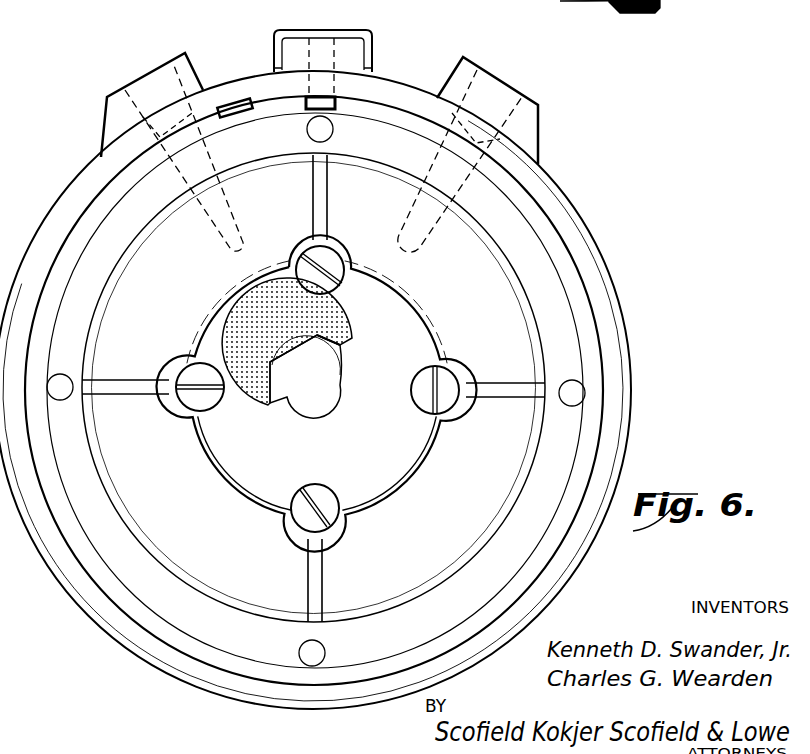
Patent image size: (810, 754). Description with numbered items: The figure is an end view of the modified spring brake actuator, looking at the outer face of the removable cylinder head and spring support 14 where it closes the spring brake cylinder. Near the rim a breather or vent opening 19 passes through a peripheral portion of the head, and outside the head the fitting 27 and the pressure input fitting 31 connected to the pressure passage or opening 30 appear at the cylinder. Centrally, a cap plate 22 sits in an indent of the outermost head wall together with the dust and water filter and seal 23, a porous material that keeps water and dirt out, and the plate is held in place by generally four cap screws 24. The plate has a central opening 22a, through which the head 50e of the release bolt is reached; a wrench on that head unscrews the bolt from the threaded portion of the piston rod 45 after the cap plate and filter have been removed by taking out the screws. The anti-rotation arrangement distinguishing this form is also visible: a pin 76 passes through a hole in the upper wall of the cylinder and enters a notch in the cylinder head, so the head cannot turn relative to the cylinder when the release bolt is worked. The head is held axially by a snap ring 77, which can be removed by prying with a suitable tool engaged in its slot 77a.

The cylinder head and spring support 14 is at (488, 302).
The breather or vent opening 19 is at (70, 394).
The cap plate 22 is at (244, 470).
The opening 22a is at (316, 418).
The dust and water filter and seal 23 is at (252, 328).
The cap screws 24 is at (194, 405).
The fitting 27 is at (277, 43).
The pressure passages or opening 30 is at (215, 198).
The pressure input fitting 31 is at (152, 74).
The piston rod 45 is at (336, 318).
The head 50e is at (332, 342).
The pin 76 is at (322, 40).
The snap ring 77 is at (397, 115).
The slot 77a is at (238, 118).